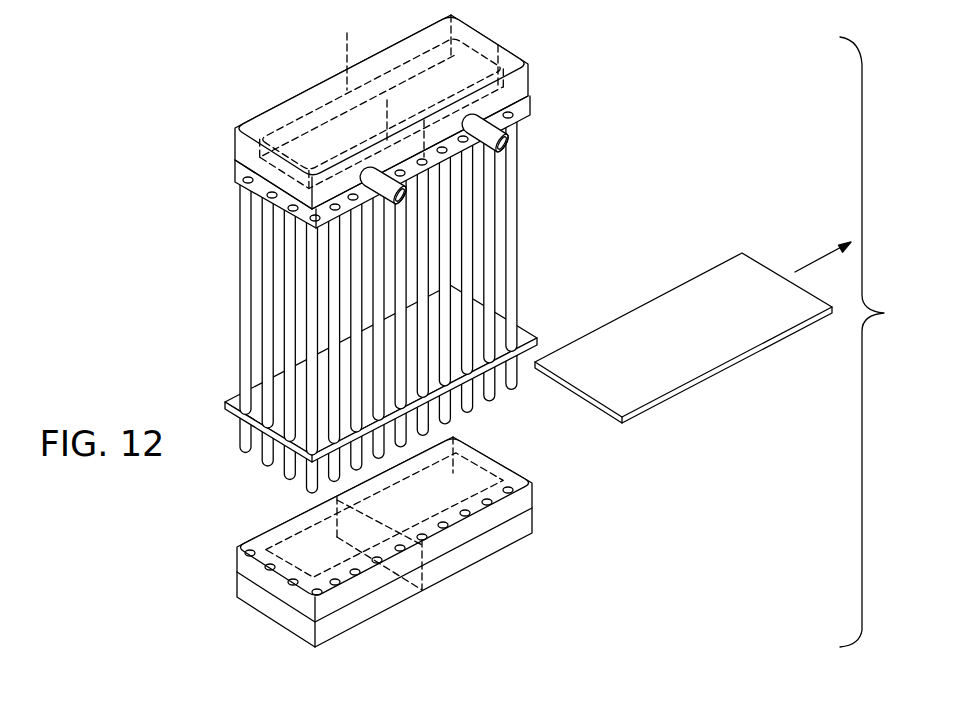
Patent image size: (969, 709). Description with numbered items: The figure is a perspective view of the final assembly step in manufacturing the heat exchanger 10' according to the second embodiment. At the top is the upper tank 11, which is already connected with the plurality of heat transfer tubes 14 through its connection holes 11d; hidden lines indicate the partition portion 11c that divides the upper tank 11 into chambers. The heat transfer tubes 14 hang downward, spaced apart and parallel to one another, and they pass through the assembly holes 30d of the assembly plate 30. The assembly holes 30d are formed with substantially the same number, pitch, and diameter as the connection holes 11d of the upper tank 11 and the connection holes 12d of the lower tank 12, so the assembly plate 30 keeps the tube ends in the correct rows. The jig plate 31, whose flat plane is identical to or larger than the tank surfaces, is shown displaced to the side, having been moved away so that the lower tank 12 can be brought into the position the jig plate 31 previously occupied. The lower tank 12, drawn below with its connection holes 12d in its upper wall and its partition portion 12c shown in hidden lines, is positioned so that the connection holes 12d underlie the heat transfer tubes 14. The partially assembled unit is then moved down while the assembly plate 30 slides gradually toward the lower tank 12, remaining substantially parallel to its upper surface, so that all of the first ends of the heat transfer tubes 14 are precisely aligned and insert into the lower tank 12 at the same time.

The heat exchanger 10' is at (368, 323).
The upper tank 11 is at (511, 40).
The partition portion 11c is at (320, 115).
The connection holes 11d is at (535, 110).
The lower tank 12 is at (546, 480).
The partition portion 12c is at (414, 591).
The connection holes 12d is at (250, 551).
The heat transfer tubes 14 is at (426, 306).
The assembly plate 30 is at (201, 432).
The assembly holes 30d is at (538, 333).
The jig plate 31 is at (692, 313).